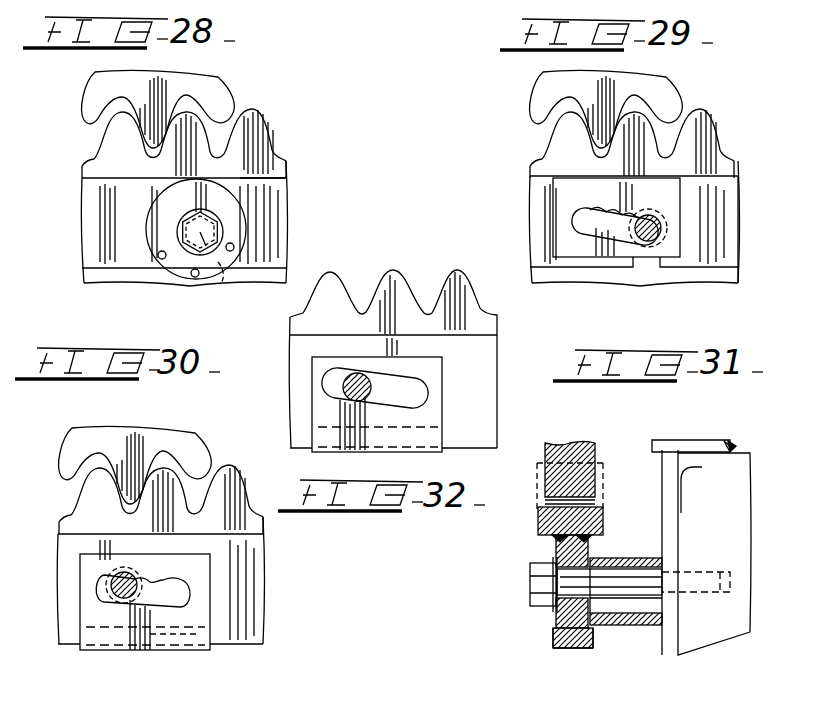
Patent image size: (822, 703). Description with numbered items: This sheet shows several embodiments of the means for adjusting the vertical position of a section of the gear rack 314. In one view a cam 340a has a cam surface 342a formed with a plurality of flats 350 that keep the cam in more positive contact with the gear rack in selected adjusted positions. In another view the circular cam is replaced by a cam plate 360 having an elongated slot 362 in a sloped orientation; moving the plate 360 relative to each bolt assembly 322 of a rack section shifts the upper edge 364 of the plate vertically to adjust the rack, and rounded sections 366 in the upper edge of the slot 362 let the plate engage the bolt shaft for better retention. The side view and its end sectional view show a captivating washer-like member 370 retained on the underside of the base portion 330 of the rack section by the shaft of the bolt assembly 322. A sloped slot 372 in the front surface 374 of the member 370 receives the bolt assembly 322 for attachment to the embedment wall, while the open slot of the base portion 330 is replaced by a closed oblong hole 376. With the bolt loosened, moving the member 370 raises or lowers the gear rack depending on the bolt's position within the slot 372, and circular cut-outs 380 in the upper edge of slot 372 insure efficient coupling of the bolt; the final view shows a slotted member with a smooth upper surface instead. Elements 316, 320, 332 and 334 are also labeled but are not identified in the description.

In FIG. 32, the gear rack 314 is at (265, 515).
In FIG. 30, the gear rack 314 is at (160, 572).
In FIG. 31, the gear rack 314 is at (540, 526).
In FIG. 30, the upper tooth member 316 is at (175, 445).
In FIG. 31, the frame member 320 is at (696, 460).
In FIG. 28, the bolt assembly 322 is at (202, 288).
In FIG. 29, the bolt assembly 322 is at (653, 247).
In FIG. 31, the bolt assembly 322 is at (620, 575).
In FIG. 28, the base portion 330 is at (100, 243).
In FIG. 31, the base portion 330 is at (580, 628).
In FIG. 28, the tooth 332 is at (257, 147).
In FIG. 28, the side edge 334 is at (92, 190).
In FIG. 29, the side edge 334 is at (748, 162).
In FIG. 28, the cam 340a is at (243, 225).
In FIG. 28, the cam surface 342a is at (248, 176).
In FIG. 28, the flats 350 is at (163, 177).
In FIG. 29, the cam plate 360 is at (664, 207).
In FIG. 29, the elongated slot 362 is at (592, 250).
In FIG. 29, the upper edge 364 is at (567, 178).
In FIG. 29, the rounded sections 366 is at (602, 212).
In FIG. 32, the captivating washer-like member 370 is at (395, 437).
In FIG. 30, the captivating washer-like member 370 is at (193, 633).
In FIG. 31, the captivating washer-like member 370 is at (562, 648).
In FIG. 32, the sloped slot 372 is at (403, 375).
In FIG. 30, the sloped slot 372 is at (187, 597).
In FIG. 31, the sloped slot 372 is at (557, 556).
In FIG. 30, the front surface 374 is at (177, 656).
In FIG. 31, the front surface 374 is at (553, 620).
In FIG. 30, the closed oblong hole 376 is at (100, 592).
In FIG. 31, the closed oblong hole 376 is at (588, 598).
In FIG. 30, the circular cut-outs 380 is at (145, 567).